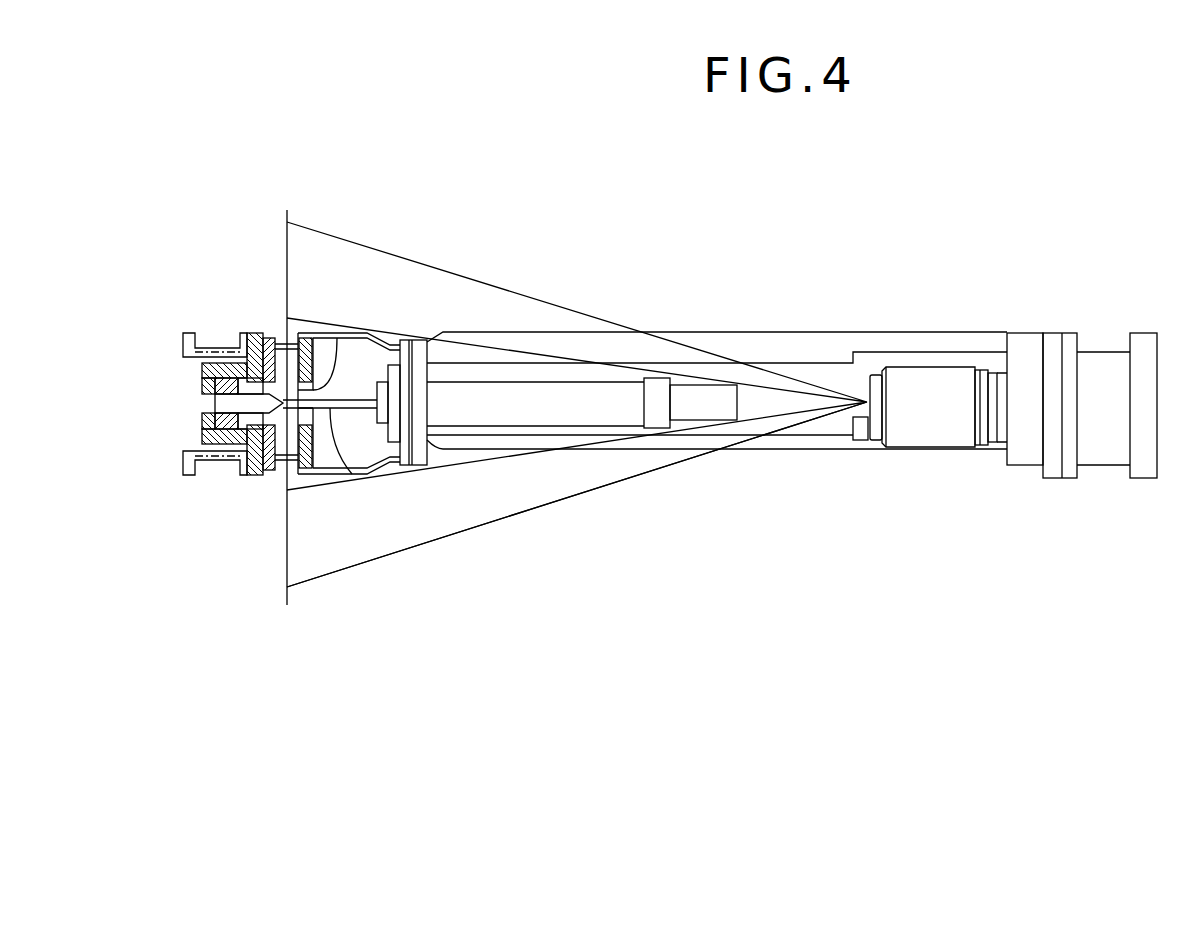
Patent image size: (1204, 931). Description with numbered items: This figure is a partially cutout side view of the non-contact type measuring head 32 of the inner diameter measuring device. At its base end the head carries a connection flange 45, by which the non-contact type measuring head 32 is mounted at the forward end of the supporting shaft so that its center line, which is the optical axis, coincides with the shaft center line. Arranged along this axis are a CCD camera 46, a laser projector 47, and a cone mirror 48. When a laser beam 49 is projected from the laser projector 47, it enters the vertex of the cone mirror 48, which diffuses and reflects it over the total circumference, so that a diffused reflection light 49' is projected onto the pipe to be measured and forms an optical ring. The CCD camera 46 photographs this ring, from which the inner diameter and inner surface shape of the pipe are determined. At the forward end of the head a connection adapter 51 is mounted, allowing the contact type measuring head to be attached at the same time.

The non-contact type measuring head 32 is at (706, 183).
The connection flange 45 is at (1137, 333).
The CCD camera 46 is at (940, 367).
The laser projector 47 is at (556, 382).
The cone mirror 48 is at (337, 340).
The laser beam 49 is at (389, 440).
The diffused reflection light 49' is at (577, 508).
The connection adapter 51 is at (210, 340).